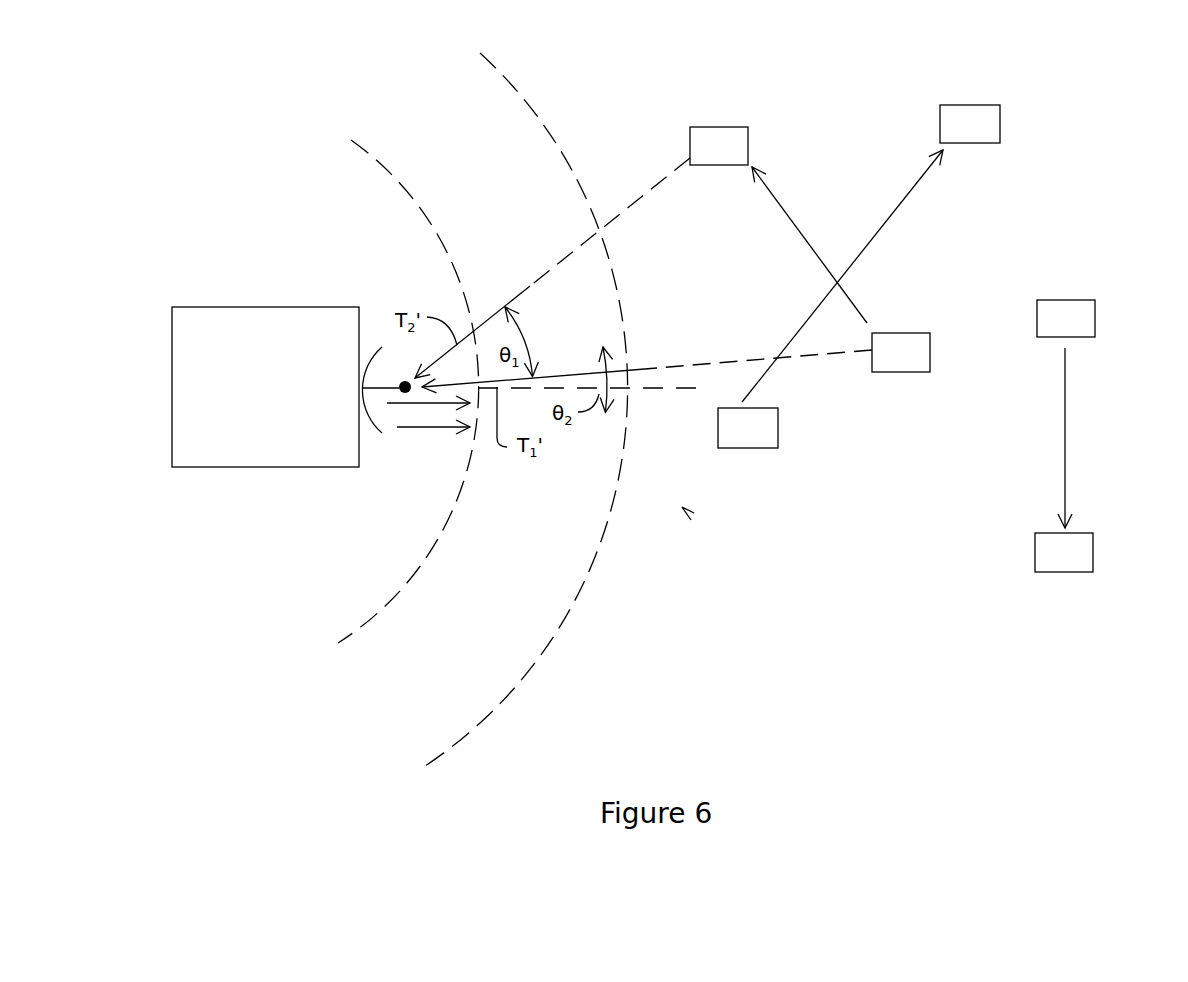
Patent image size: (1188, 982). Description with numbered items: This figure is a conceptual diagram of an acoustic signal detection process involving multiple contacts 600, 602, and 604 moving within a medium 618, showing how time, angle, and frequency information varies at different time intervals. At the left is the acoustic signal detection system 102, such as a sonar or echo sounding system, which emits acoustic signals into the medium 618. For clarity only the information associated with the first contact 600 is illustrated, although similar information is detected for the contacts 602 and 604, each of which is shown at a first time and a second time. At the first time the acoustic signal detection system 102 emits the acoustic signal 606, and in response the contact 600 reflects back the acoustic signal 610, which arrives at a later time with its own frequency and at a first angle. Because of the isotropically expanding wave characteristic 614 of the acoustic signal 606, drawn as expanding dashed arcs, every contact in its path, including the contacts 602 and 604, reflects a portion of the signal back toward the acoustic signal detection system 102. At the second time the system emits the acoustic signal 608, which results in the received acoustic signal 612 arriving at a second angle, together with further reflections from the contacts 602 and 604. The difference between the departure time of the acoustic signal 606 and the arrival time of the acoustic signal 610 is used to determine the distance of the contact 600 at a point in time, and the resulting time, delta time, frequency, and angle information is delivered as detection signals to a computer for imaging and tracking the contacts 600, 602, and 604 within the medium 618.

The acoustic signal detection system 102 is at (218, 306).
The contact 600 is at (745, 127).
The contact 602 is at (990, 107).
The contact 604 is at (1090, 300).
The acoustic signal 606 is at (422, 406).
The acoustic signal 608 is at (440, 430).
The acoustic signal 610 is at (647, 368).
The received acoustic signal 612 is at (520, 287).
The isotropically expanding wave characteristic 614 is at (560, 150).
The medium 618 is at (682, 508).